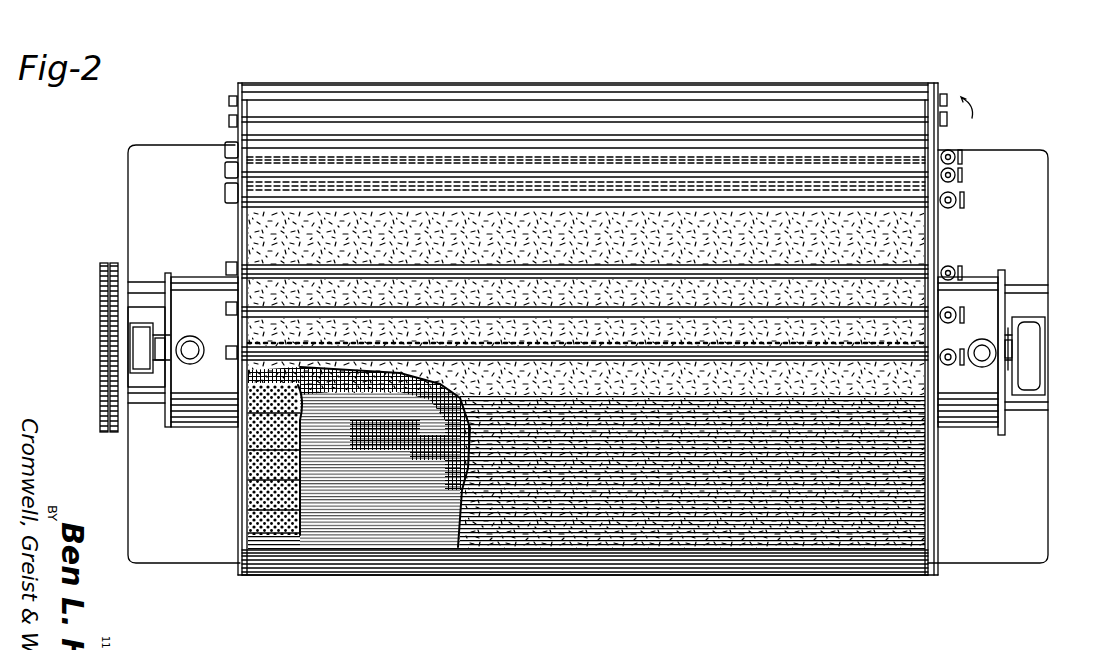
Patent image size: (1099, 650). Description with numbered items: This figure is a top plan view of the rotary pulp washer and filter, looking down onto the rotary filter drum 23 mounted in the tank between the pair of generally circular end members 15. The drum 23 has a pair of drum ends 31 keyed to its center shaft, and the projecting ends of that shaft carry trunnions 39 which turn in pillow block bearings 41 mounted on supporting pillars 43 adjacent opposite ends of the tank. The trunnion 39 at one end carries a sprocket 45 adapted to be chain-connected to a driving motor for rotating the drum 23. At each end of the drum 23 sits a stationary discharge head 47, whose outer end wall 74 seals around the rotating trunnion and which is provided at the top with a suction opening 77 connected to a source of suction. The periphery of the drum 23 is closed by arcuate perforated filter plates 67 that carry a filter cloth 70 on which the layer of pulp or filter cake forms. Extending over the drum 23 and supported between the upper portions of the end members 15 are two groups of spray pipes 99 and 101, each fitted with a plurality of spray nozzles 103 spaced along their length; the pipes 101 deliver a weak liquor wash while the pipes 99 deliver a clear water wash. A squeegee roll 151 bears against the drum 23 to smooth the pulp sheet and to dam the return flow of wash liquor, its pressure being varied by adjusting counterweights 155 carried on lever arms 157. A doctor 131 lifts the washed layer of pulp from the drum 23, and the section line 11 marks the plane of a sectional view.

The section line 11 is at (602, 508).
The end members 15 is at (248, 515).
The rotary filter drum 23 is at (705, 550).
The drum ends 31 is at (250, 473).
The trunnions 39 is at (160, 360).
The pillow block bearings 41 is at (130, 330).
The supporting pillars 43 is at (140, 285).
The sprocket 45 is at (105, 276).
The discharge head 47 is at (186, 418).
The perforated filter plate 67 is at (252, 440).
The filter cloth 70 is at (378, 530).
The outer end wall 74 is at (168, 292).
The suction opening 77 is at (196, 346).
The spray pipes 99 is at (433, 355).
The spray pipes 101 is at (676, 175).
The spray nozzles 103 is at (345, 340).
The doctor 131 is at (808, 574).
The squeegee roll 151 is at (748, 127).
The counterweights 155 is at (228, 100).
The lever arms 157 is at (226, 120).